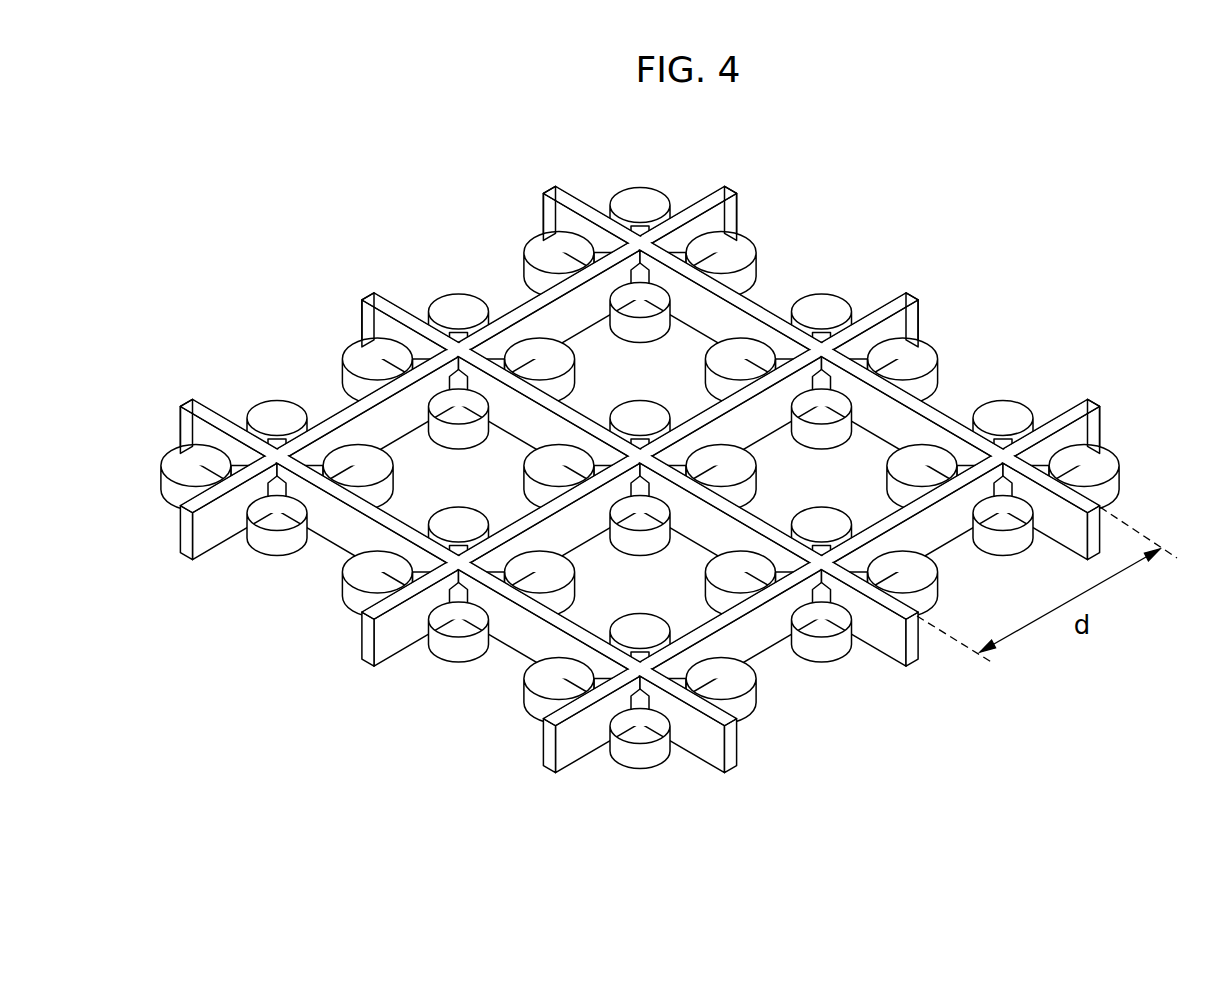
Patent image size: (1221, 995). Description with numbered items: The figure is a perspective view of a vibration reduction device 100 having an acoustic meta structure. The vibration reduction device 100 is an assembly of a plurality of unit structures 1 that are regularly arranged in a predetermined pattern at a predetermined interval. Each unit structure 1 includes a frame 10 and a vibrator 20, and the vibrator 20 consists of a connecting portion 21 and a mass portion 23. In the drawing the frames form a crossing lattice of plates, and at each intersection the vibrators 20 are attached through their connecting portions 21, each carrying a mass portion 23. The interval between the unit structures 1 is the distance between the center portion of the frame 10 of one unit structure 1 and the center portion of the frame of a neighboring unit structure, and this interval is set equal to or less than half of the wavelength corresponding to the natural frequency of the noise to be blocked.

The vibration reduction device 100 is at (489, 162).
The frame 10 is at (182, 404).
The unit structure 1 is at (258, 398).
The vibrator 20 is at (290, 664).
The connecting portion 21 is at (276, 487).
The mass portion 23 is at (277, 542).